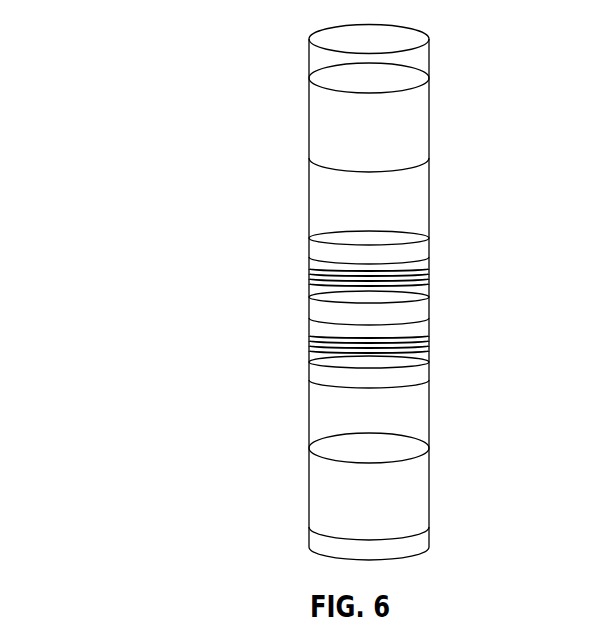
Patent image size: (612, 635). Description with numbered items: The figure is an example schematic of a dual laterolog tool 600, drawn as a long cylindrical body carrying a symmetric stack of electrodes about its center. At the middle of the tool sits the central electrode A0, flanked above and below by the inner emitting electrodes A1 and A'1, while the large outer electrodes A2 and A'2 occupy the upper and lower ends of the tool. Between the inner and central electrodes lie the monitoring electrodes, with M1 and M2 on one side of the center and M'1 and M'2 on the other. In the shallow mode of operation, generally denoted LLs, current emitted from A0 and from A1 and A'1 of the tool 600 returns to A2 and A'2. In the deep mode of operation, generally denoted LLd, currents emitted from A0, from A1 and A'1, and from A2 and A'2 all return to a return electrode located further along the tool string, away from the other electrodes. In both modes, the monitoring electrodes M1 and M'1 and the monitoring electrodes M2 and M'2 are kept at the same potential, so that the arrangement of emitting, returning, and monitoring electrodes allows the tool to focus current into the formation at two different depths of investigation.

The dual laterolog tool 600 is at (126, 76).
The return electrode A2 is at (393, 117).
The emitting electrode A1 is at (344, 245).
The monitoring electrode M1 is at (344, 283).
The monitoring electrode M2 is at (395, 276).
The central electrode A0 is at (394, 317).
The monitoring electrode M'1 is at (344, 332).
The monitoring electrode M'2 is at (396, 368).
The emitting electrode A'1 is at (344, 374).
The return electrode A'2 is at (395, 486).